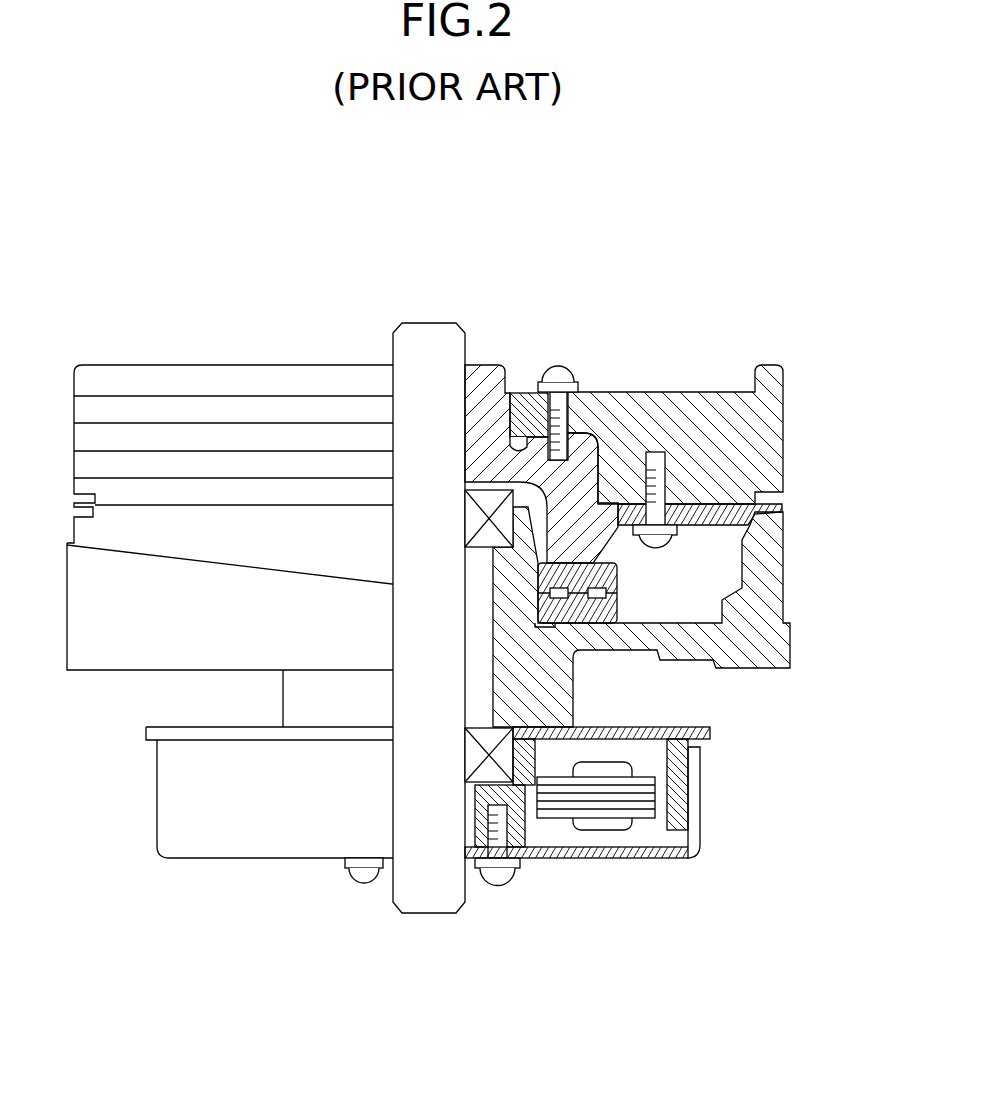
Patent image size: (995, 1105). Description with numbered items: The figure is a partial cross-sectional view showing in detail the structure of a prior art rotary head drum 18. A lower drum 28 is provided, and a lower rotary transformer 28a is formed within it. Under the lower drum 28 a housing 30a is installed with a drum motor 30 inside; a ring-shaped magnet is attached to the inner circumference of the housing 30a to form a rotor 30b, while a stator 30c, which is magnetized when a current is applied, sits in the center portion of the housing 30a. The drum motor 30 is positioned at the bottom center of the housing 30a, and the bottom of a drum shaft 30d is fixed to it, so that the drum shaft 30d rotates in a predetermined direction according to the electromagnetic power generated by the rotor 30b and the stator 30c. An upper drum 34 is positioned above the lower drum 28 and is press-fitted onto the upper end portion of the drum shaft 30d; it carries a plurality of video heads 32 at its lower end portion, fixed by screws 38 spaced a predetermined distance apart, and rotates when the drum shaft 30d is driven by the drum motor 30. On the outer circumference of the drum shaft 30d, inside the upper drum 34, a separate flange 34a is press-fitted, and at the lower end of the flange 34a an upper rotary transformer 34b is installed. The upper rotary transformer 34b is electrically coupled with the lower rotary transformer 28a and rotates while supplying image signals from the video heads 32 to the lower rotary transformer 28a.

The spindle motor assembly 18 is at (101, 239).
The lower drum 28 is at (93, 648).
The lower rotary transformer 28a is at (600, 609).
The drum motor 30 is at (226, 859).
The housing 30a is at (633, 860).
The rotor 30b is at (676, 762).
The stator 30c is at (557, 808).
The drum shaft 30d is at (428, 915).
The video heads 32 is at (762, 510).
The upper drum 34 is at (148, 407).
The flange 34a is at (485, 386).
The upper rotary transformer 34b is at (598, 575).
The screws 38 is at (662, 540).